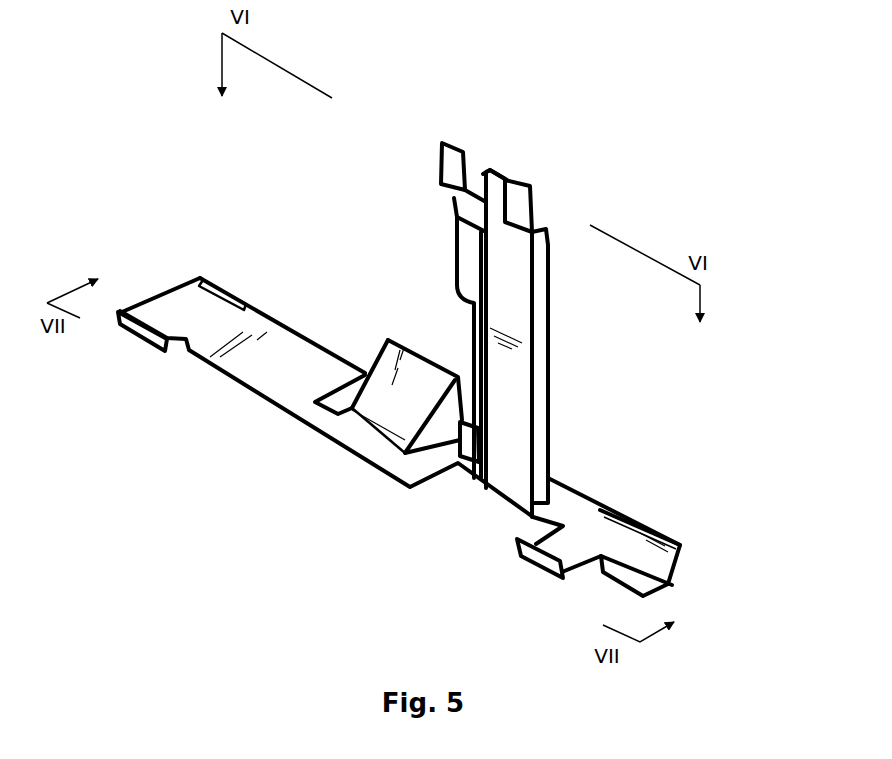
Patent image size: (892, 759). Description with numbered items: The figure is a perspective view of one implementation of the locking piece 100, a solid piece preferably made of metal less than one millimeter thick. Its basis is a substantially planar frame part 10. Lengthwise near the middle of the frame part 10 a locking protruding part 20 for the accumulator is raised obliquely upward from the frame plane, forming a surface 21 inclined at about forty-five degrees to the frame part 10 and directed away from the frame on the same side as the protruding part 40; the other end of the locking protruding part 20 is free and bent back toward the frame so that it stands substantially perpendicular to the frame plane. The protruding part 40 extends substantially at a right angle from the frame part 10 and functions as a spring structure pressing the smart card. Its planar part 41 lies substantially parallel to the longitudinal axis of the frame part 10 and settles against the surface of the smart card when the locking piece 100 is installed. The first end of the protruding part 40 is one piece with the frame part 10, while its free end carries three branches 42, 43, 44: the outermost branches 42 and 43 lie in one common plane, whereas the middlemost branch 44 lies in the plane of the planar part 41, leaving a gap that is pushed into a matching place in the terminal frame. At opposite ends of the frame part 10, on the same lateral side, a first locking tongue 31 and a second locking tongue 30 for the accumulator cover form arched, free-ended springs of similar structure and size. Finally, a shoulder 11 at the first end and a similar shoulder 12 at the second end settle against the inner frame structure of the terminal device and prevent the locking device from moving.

The locking piece 100 is at (196, 529).
The frame part 10 is at (273, 378).
The shoulder 11 is at (137, 334).
The shoulder 12 is at (532, 563).
The locking protruding part 20 is at (382, 338).
The surface 21 is at (395, 397).
The second locking tongue 30 is at (690, 558).
The first locking tongue 31 is at (243, 292).
The protruding part 40 is at (575, 373).
The planar part 41 is at (545, 288).
The protruding part branch 42 is at (443, 157).
The protruding part branch 43 is at (530, 182).
The protruding part branch 44 is at (493, 170).